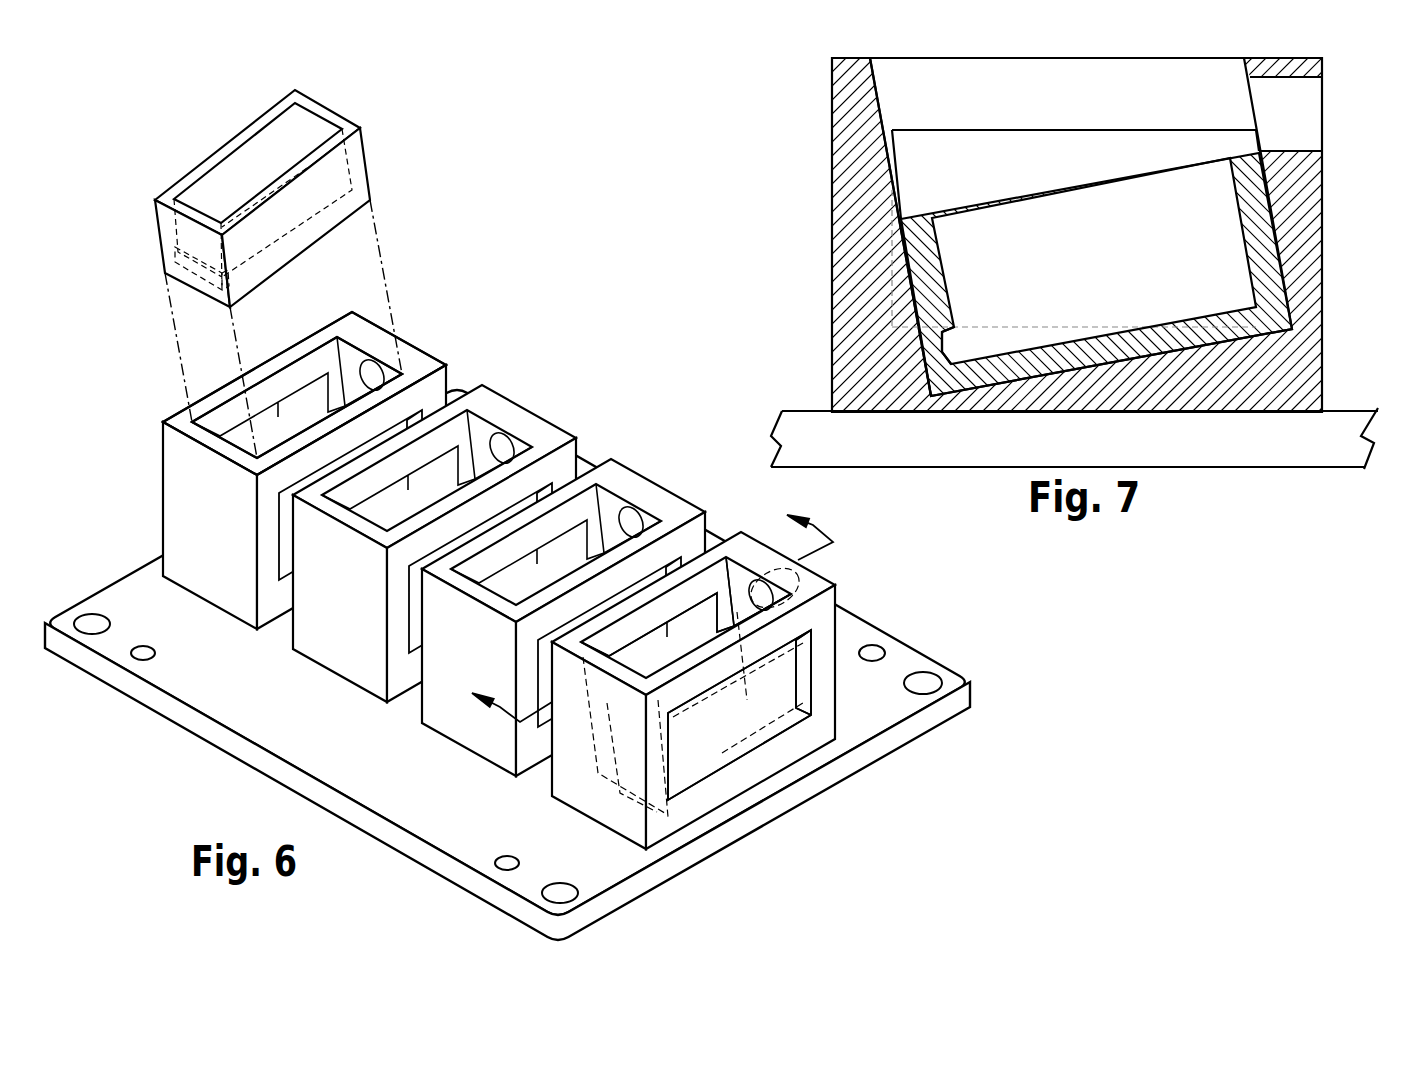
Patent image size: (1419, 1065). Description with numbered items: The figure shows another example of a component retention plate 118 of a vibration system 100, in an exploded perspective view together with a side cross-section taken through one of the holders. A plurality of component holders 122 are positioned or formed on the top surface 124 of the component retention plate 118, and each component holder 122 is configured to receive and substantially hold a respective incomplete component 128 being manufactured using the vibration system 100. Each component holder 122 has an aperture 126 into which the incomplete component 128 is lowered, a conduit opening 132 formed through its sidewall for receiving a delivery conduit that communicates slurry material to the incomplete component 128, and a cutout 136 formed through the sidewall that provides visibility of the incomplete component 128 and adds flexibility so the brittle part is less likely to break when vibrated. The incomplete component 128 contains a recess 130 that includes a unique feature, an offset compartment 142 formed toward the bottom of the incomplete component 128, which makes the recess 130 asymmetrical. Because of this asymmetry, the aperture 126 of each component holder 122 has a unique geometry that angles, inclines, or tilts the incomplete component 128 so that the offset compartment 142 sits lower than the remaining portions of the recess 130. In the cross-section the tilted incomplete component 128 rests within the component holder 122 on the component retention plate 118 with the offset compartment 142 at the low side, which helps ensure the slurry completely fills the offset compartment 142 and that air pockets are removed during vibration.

In FIG. 6, the vibration system 100 is at (534, 510).
In FIG. 6, the component retention plate 118 is at (534, 665).
In FIG. 7, the component retention plate 118 is at (1038, 416).
In FIG. 6, the component holder 122 is at (272, 455).
In FIG. 7, the component holder 122 is at (1062, 217).
In FIG. 6, the top surface 124 is at (332, 719).
In FIG. 7, the top surface 124 is at (812, 411).
In FIG. 6, the aperture 126 is at (282, 340).
In FIG. 7, the aperture 126 is at (1027, 39).
In FIG. 6, the incomplete component 128 is at (272, 201).
In FIG. 7, the incomplete component 128 is at (1031, 263).
In FIG. 6, the recess 130 is at (248, 162).
In FIG. 7, the recess 130 is at (1089, 261).
In FIG. 6, the conduit opening 132 is at (763, 583).
In FIG. 7, the conduit opening 132 is at (1322, 118).
In FIG. 6, the cutout 136 is at (812, 655).
In FIG. 7, the cutout 136 is at (926, 128).
In FIG. 6, the offset compartment 142 is at (178, 290).
In FIG. 7, the offset compartment 142 is at (899, 353).